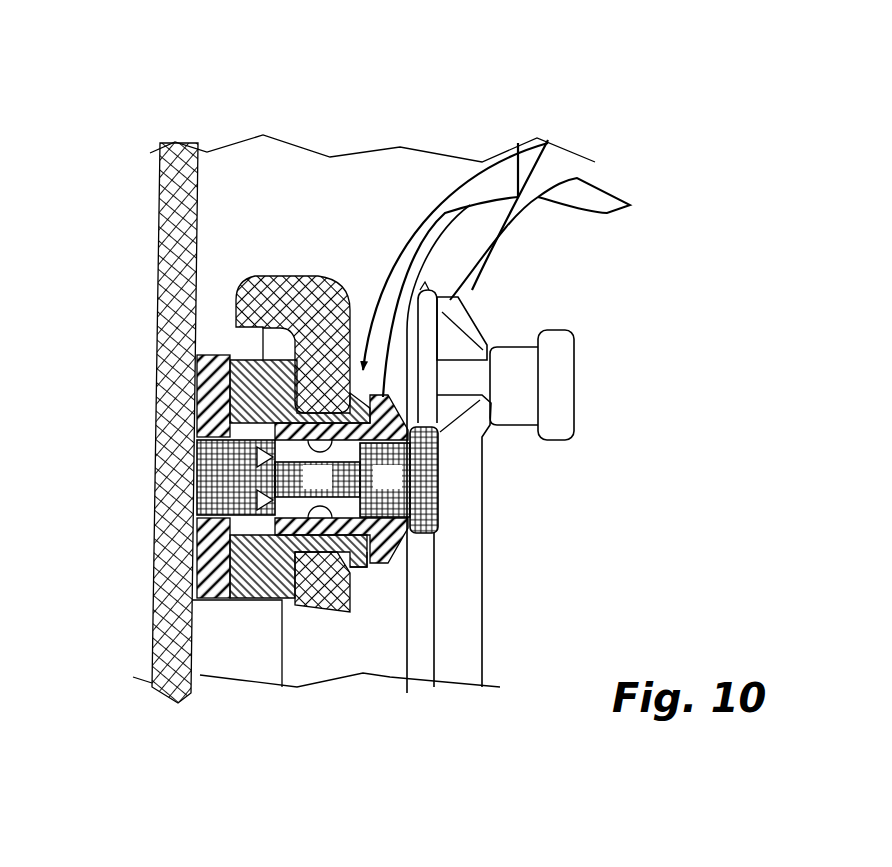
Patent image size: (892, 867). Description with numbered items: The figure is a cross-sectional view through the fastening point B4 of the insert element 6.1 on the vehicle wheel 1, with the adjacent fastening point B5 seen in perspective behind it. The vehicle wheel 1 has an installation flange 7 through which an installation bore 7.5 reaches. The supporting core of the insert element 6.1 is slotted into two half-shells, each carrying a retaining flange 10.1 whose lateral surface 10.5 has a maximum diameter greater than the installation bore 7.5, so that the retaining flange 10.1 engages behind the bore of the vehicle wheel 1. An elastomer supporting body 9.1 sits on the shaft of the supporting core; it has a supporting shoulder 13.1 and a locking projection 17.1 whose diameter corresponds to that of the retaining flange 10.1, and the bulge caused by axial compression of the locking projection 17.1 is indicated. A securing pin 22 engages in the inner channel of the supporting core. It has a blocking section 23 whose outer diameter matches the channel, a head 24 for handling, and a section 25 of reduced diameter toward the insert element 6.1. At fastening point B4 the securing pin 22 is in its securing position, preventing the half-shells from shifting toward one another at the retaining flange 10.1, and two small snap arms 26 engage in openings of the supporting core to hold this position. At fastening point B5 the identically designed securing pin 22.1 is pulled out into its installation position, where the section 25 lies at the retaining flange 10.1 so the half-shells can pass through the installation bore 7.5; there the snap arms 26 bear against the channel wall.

The vehicle wheel 1 is at (313, 130).
The insert element 6.1 is at (155, 368).
The installation bore 7.5 is at (318, 407).
The snap arms 26 is at (250, 430).
The fastening point B4 is at (373, 390).
The lateral surface 10.5 is at (415, 272).
The retaining flange 10.1 is at (383, 567).
The fastening point B5 is at (477, 306).
The securing pin 22 is at (534, 449).
The securing pin 22.1 is at (580, 394).
The section with reduced diameter 25 is at (302, 479).
The blocking section 23 is at (385, 480).
The head 24 is at (427, 540).
The supporting body 9.1 is at (267, 607).
The supporting shoulder 13.1 is at (253, 598).
The installation flange 7 is at (310, 615).
The locking projection 17.1 is at (357, 570).